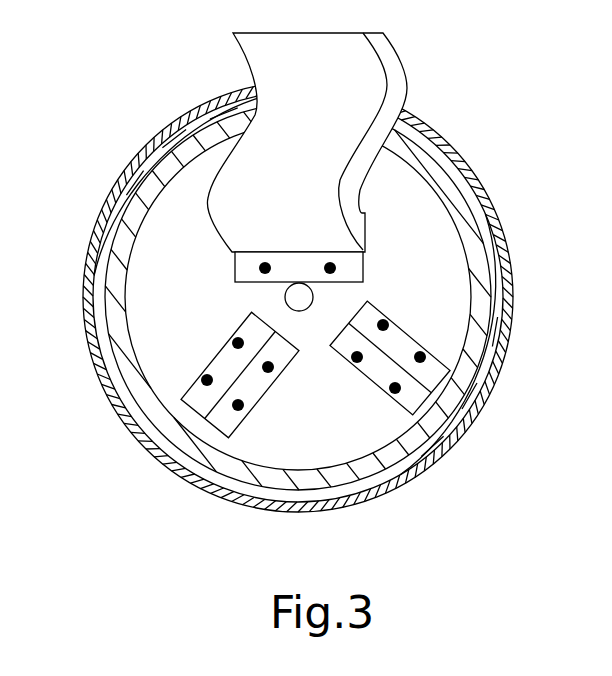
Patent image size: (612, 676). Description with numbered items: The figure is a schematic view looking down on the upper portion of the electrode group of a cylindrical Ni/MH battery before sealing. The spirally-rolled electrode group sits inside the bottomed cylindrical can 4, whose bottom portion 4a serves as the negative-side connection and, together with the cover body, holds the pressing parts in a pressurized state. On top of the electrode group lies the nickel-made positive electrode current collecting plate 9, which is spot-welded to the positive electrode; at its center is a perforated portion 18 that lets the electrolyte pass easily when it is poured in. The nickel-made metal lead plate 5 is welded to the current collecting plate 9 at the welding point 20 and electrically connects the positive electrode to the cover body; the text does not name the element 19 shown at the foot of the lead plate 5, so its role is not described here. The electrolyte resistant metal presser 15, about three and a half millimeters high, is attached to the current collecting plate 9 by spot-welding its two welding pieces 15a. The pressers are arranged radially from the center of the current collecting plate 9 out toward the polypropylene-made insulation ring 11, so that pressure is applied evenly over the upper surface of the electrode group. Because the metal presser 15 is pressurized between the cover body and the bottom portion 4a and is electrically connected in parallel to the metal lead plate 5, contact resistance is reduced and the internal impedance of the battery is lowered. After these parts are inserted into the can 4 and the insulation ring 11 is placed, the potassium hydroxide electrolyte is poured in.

The bottomed cylindrical can 4 is at (98, 223).
The bottom portion of the bottomed cylindrical can 4a is at (122, 190).
The insulation ring 11 is at (162, 142).
The metal lead plate 5 is at (362, 57).
The holder 19 is at (245, 268).
The welding point 20 is at (340, 268).
The perforated portion 18 is at (292, 300).
The electrolyte resistant metal presser 15 is at (420, 381).
The welding pieces 15a is at (440, 373).
The current collecting plate 9 is at (307, 434).